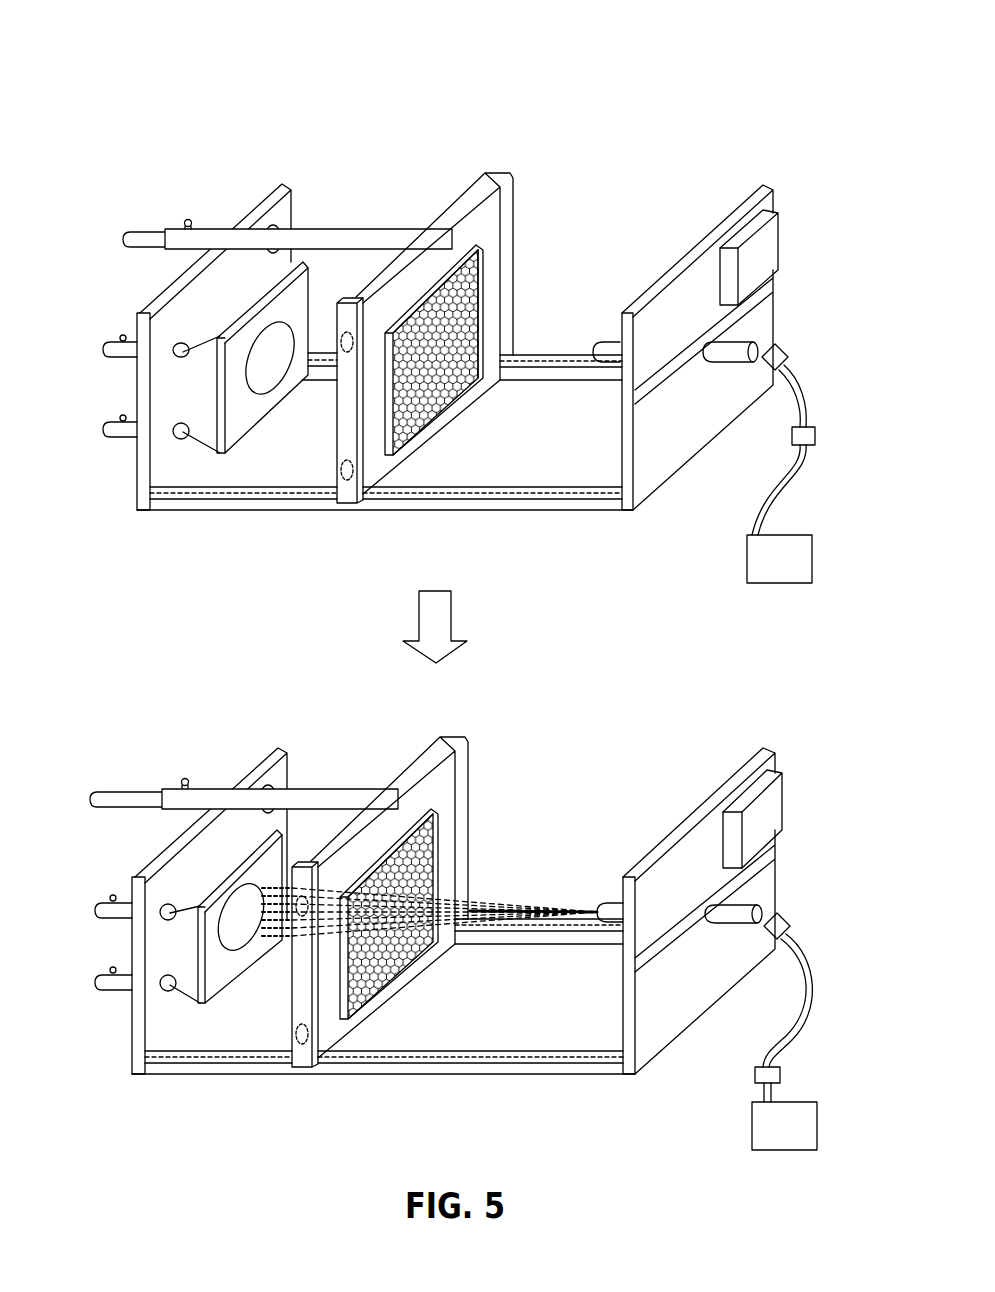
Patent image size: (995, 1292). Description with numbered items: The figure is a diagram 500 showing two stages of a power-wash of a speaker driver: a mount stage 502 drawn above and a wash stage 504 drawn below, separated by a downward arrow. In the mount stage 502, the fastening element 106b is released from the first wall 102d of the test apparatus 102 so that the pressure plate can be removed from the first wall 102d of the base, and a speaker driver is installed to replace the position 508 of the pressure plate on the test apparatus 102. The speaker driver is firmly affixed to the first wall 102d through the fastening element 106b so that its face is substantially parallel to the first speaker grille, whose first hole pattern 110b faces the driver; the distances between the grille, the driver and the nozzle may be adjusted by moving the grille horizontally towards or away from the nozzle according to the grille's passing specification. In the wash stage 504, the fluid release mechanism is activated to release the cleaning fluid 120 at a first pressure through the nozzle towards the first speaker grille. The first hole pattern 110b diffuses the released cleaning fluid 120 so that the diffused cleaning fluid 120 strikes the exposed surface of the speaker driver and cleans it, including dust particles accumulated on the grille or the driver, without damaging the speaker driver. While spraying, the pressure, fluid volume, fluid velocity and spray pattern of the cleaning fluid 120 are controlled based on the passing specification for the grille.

The diagram 500 is at (85, 35).
The mount stage 502 is at (446, 356).
The wash stage 504 is at (472, 903).
The test apparatus 102 is at (475, 322).
The first wall 102d is at (263, 208).
The fastening element 106b is at (118, 340).
The first hole pattern 110b is at (472, 361).
The cleaning fluid 120 is at (518, 897).
The position 508 is at (165, 387).